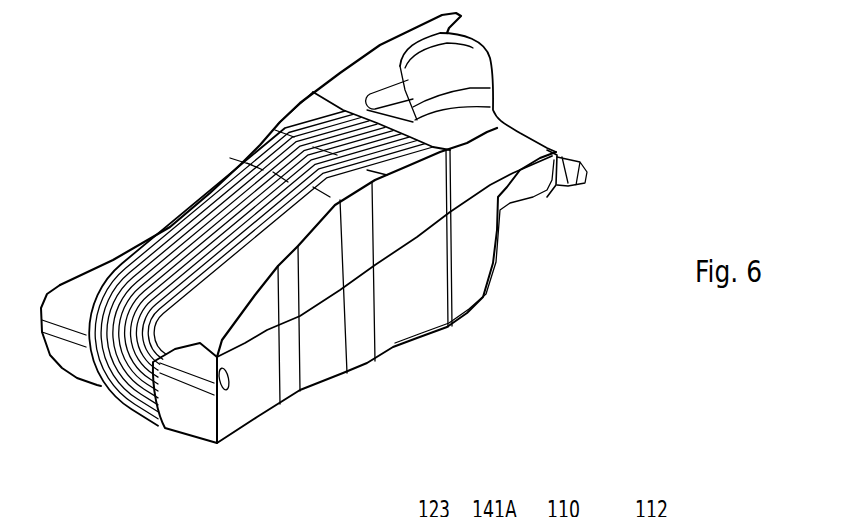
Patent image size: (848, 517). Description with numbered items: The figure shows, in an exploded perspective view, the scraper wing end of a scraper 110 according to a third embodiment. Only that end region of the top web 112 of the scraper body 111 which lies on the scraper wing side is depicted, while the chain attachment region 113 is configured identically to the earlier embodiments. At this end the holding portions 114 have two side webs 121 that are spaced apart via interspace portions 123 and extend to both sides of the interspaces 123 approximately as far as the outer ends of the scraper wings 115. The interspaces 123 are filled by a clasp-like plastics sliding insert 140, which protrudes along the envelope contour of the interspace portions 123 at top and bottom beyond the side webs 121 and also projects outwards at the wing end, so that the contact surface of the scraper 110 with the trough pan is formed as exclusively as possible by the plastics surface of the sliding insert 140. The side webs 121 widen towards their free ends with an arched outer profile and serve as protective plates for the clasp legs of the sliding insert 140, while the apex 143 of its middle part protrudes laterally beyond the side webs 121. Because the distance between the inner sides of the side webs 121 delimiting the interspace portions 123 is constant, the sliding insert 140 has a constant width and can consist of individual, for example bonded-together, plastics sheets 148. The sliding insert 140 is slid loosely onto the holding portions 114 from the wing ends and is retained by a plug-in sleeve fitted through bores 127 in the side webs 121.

The scraper 110 is at (143, 112).
The scraper body 111 is at (523, 188).
The top web 112 is at (377, 73).
The chain attachment region 113 is at (565, 198).
The holding portions 114 is at (215, 158).
The scraper wings 115 is at (183, 193).
The side webs 121 is at (162, 237).
The interspace portions 123 is at (257, 160).
The bores 127 is at (228, 376).
The sliding insert 140 is at (138, 436).
The apex 143 is at (102, 403).
The plastics sheets 148 is at (140, 297).